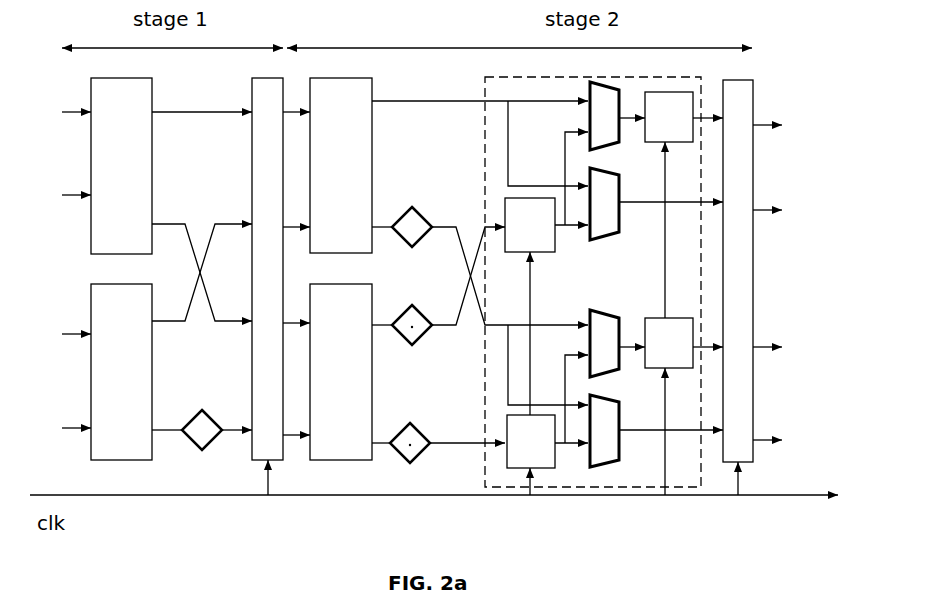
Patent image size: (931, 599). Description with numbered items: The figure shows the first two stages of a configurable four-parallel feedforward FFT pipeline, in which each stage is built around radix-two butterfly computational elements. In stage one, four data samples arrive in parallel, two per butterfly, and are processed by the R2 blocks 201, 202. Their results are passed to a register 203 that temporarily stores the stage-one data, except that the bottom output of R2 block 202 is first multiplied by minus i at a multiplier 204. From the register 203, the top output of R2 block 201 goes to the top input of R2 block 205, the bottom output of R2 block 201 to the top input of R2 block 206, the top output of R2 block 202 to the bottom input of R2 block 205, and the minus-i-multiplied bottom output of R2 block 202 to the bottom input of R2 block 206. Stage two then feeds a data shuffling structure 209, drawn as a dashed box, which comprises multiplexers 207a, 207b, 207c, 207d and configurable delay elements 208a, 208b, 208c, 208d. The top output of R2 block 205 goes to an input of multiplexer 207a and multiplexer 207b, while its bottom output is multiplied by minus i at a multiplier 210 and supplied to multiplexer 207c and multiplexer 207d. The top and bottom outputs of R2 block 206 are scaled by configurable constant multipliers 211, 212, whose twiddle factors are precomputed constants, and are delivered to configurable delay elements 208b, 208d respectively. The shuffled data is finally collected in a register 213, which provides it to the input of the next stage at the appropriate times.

The R2 block 201 is at (98, 254).
The R2 block 202 is at (103, 460).
The register 203 is at (252, 172).
The multiplier 204 is at (195, 447).
The R2 block 205 is at (340, 78).
The R2 block 206 is at (345, 460).
The multiplexer 207a is at (588, 92).
The multiplexer 207b is at (597, 237).
The multiplexer 207c is at (617, 318).
The multiplexer 207d is at (621, 440).
The configurable delay element 208a is at (672, 92).
The configurable delay element 208b is at (507, 200).
The configurable delay element 208c is at (650, 318).
The configurable delay element 208d is at (510, 468).
The data shuffling structure 209 is at (625, 492).
The multiplier 210 is at (412, 205).
The configurable constant multiplier 211 is at (420, 346).
The configurable constant multiplier 212 is at (410, 465).
The register 213 is at (753, 165).